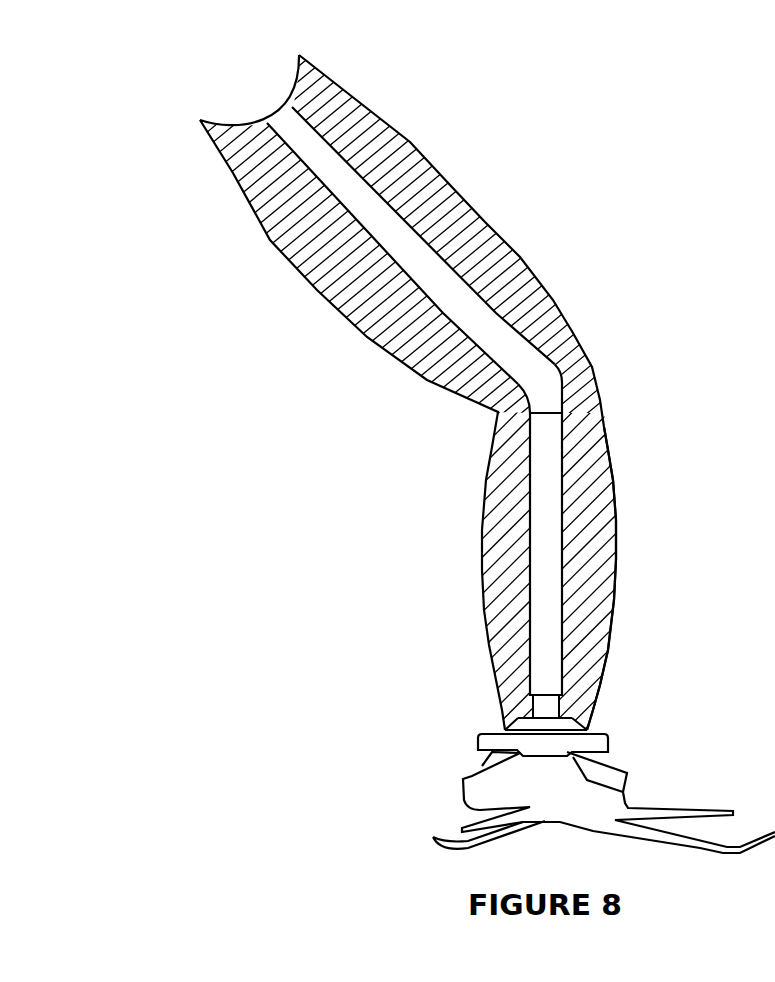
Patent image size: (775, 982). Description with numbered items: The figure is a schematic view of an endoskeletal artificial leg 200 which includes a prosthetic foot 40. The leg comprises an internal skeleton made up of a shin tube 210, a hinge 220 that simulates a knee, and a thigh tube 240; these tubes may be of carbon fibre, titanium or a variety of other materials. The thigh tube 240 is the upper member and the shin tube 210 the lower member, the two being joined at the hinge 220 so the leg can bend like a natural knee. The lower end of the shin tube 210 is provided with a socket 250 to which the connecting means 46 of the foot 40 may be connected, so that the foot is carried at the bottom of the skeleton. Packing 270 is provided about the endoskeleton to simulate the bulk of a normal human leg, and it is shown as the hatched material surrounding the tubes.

The endoskeletal artificial leg 200 is at (419, 403).
The socket 250 is at (237, 125).
The thigh tube 240 is at (383, 220).
The hinge 220 is at (543, 390).
The shin tube 210 is at (540, 667).
The packing 270 is at (582, 640).
The connecting means 46 is at (545, 705).
The prosthetic foot 40 is at (485, 785).